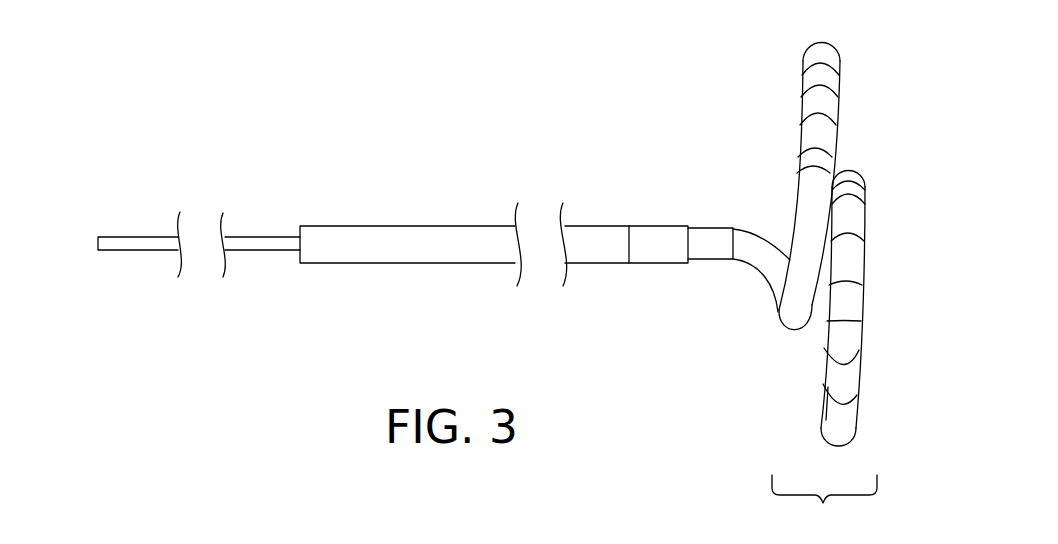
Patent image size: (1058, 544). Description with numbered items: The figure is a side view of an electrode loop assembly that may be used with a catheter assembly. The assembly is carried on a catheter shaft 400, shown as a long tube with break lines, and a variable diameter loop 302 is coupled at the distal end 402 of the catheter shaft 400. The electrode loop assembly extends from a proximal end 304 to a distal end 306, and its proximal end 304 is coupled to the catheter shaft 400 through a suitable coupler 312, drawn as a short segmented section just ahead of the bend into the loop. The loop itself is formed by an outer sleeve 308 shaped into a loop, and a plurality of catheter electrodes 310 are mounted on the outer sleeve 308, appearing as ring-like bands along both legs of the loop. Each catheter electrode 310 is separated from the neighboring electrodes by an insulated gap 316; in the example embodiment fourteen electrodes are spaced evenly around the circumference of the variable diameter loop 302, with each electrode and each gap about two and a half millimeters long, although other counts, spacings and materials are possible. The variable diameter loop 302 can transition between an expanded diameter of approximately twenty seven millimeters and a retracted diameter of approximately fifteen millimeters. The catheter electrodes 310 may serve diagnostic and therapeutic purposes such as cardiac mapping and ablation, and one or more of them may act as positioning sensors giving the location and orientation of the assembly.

The variable diameter loop 302 is at (824, 506).
The proximal end 304 is at (707, 216).
The distal end 306 is at (114, 109).
The outer sleeve 308 is at (812, 100).
The catheter electrodes 310 is at (823, 130).
The coupler 312 is at (650, 216).
The insulated gap 316 is at (847, 350).
The catheter shaft 400 is at (152, 226).
The distal end of catheter shaft 402 is at (643, 276).